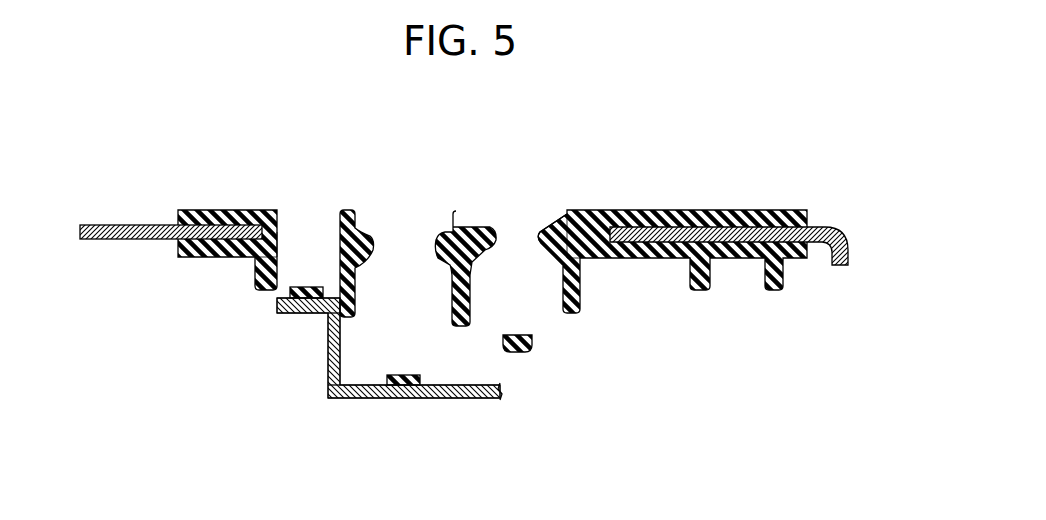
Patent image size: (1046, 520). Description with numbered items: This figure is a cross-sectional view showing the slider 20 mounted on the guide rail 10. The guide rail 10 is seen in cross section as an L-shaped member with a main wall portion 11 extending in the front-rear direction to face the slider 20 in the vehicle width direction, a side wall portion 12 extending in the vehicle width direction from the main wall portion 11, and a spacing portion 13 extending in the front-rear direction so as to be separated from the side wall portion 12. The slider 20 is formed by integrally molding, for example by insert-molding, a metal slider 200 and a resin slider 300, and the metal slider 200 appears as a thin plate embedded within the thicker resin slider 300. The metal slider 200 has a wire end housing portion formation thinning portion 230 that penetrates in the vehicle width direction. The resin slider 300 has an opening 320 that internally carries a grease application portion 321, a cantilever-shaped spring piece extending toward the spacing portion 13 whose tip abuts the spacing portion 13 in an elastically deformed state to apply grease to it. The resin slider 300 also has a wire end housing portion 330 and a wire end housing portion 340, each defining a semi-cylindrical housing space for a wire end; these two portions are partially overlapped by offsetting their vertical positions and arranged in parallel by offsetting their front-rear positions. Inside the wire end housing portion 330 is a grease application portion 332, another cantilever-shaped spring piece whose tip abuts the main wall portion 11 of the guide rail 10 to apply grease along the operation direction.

The slider 20 is at (464, 204).
The metal slider 200 is at (236, 134).
The resin slider 300 is at (228, 210).
The wire end housing portion formation thinning portion 230 is at (270, 232).
The opening 320 is at (340, 230).
The grease application portion 321 is at (306, 287).
The wire end housing portion 330 is at (366, 272).
The grease application portion 332 is at (410, 398).
The wire end housing portion 340 is at (552, 263).
The guide rail 10 is at (375, 383).
The main wall portion 11 is at (448, 400).
The side wall portion 12 is at (328, 348).
The spacing portion 13 is at (285, 315).